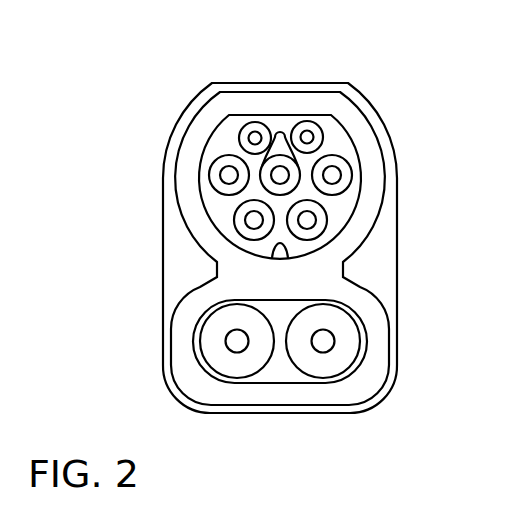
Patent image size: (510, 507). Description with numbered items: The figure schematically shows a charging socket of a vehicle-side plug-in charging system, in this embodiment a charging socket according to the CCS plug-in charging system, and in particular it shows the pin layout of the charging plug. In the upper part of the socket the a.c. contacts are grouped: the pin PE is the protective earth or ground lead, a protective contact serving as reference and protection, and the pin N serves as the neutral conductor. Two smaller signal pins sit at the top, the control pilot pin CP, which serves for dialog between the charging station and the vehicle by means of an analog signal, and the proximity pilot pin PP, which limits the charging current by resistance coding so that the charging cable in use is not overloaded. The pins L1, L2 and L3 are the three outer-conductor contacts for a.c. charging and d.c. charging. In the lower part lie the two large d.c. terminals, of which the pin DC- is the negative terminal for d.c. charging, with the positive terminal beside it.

The protective earth pin PE is at (280, 149).
The proximity pilot pin PP is at (245, 131).
The control pilot pin CP is at (317, 133).
The outer-conductor contact L1 is at (218, 165).
The neutral conductor pin N is at (345, 168).
The outer-conductor contact L2 is at (243, 213).
The outer-conductor contact L3 is at (320, 218).
The negative DC terminal pin DC- is at (227, 342).